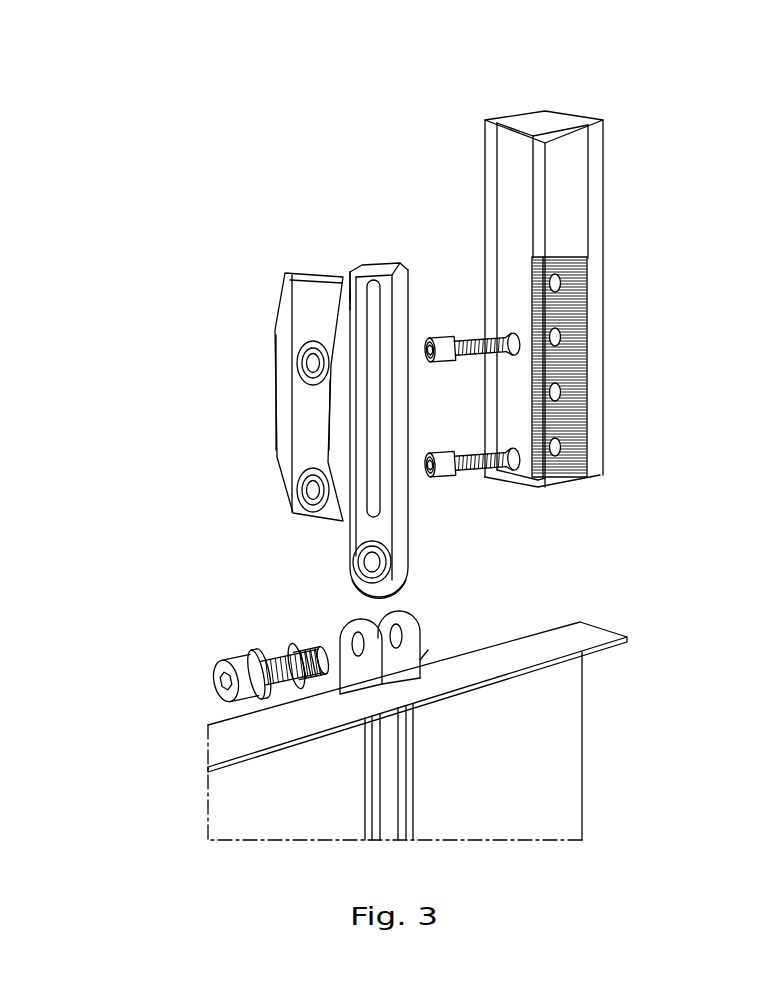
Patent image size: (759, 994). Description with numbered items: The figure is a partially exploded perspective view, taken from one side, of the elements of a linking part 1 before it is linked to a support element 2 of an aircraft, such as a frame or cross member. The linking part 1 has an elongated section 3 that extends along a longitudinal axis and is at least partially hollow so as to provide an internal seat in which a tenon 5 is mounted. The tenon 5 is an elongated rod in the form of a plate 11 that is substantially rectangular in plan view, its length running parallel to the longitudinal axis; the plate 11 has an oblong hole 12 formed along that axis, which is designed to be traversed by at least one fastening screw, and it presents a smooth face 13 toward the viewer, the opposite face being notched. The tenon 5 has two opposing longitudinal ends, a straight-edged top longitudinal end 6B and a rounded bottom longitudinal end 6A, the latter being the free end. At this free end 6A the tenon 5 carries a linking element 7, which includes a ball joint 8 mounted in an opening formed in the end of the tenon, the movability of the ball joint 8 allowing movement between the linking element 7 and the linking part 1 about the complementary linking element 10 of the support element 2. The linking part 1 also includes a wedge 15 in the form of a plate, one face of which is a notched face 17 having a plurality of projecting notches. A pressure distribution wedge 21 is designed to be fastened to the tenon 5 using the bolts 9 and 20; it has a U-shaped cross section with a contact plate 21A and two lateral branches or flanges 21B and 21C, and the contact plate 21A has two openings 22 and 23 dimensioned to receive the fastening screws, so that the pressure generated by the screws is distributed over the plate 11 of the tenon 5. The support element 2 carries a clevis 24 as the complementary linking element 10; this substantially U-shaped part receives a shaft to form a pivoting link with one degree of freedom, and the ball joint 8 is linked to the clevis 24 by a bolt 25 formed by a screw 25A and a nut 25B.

The linking part 1 is at (432, 136).
The support element 2 is at (600, 622).
The elongated section 3 is at (594, 104).
The tenon 5 is at (375, 260).
The bottom longitudinal end 6A is at (344, 589).
The top longitudinal end 6B is at (342, 258).
The linking element 7 is at (335, 560).
The ball joint 8 is at (367, 570).
The bolt 9 is at (443, 332).
The complementary linking element 10 is at (429, 620).
The plate 11 is at (386, 268).
The oblong hole 12 is at (372, 403).
The smooth face 13 is at (356, 297).
The wedge 15 is at (588, 280).
The notched face 17 is at (568, 362).
The bolt 20 is at (478, 488).
The pressure distribution wedge 21 is at (288, 274).
The contact plate 21A is at (316, 272).
The lateral branch 21B is at (278, 348).
The lateral branch 21C is at (333, 435).
The opening 22 is at (301, 368).
The opening 23 is at (301, 488).
The clevis 24 is at (431, 654).
The bolt 25 is at (207, 638).
The screw 25A is at (215, 685).
The nut 25B is at (305, 726).